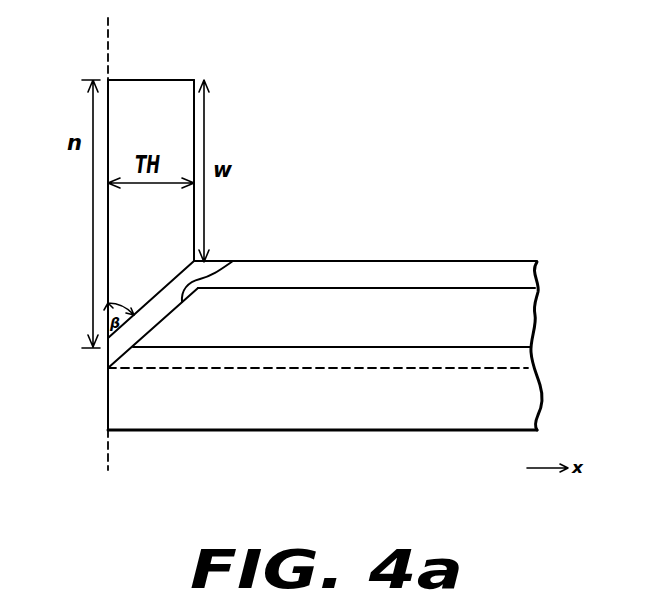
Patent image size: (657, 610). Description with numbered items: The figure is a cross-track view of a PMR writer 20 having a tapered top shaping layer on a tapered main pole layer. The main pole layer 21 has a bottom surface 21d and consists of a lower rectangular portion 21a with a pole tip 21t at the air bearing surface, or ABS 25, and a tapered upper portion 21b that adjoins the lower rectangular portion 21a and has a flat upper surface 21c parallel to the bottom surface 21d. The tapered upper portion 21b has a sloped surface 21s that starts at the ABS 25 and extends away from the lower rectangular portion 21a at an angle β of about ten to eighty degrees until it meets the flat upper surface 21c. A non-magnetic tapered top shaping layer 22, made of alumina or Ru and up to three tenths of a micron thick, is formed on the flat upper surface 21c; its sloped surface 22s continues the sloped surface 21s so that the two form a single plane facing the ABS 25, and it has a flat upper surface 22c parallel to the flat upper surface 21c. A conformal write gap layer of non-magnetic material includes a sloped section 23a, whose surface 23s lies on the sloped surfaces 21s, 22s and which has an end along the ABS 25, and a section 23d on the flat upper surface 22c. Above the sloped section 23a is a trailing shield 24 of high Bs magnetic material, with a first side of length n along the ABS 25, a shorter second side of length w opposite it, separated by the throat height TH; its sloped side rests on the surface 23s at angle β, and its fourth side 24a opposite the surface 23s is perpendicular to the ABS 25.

The PMR writer 20 is at (373, 122).
The main pole layer 21 is at (547, 347).
The lower rectangular portion 21a is at (317, 413).
The tapered upper portion 21b is at (445, 360).
The flat upper surface 21c is at (242, 348).
The bottom surface 21d is at (377, 430).
The sloped surface 21s is at (133, 350).
The pole tip 21t is at (107, 400).
The tapered top shaping layer 22 is at (533, 308).
The flat upper surface 22c is at (342, 289).
The sloped surface 22s is at (232, 261).
The sloped section 23a is at (117, 352).
The section 23d is at (517, 272).
The surface 23s is at (163, 288).
The trailing shield 24 is at (165, 98).
The fourth side 24a is at (148, 80).
The ABS 25 is at (115, 472).